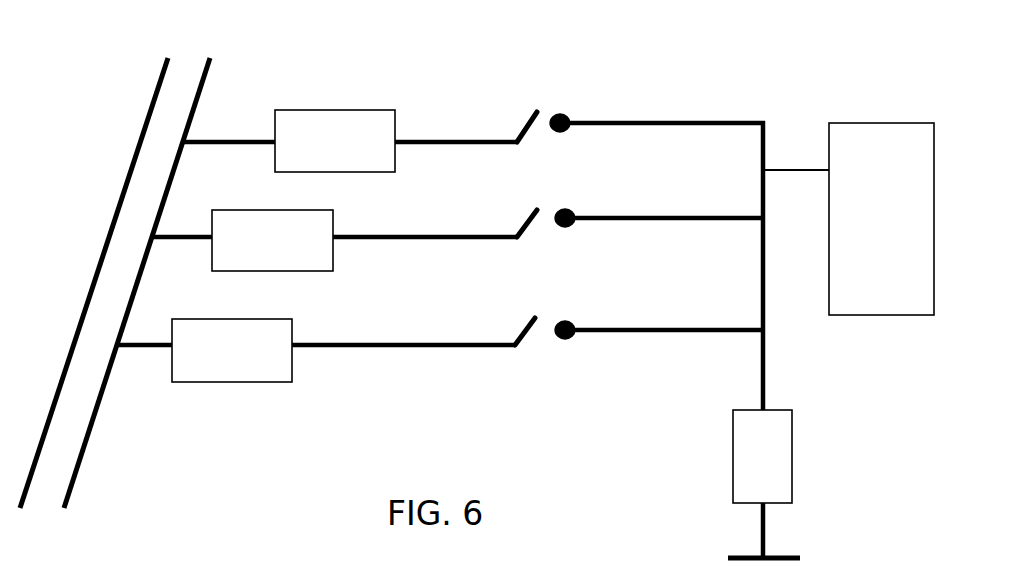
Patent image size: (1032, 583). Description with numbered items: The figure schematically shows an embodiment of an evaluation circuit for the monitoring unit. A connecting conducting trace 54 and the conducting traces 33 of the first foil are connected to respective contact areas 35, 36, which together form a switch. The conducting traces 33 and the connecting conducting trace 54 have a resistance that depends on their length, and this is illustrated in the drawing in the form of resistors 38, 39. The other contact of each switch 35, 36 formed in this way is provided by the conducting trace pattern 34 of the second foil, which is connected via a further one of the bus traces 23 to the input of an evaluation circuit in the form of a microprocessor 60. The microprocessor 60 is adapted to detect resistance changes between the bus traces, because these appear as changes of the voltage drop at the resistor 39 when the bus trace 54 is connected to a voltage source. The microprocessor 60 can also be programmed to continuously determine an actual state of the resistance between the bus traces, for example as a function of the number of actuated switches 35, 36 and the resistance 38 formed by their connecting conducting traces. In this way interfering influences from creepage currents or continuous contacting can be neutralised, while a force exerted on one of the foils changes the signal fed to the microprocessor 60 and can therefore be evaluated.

The connecting conducting trace 54 is at (182, 72).
The conducting trace 33 is at (220, 137).
The resistor 38 is at (328, 122).
The resistor 39 is at (793, 442).
The contact area 35 is at (527, 117).
The contact area 36 is at (567, 113).
The conducting trace pattern 34 is at (733, 120).
The bus trace 23 is at (793, 170).
The microprocessor 60 is at (868, 123).